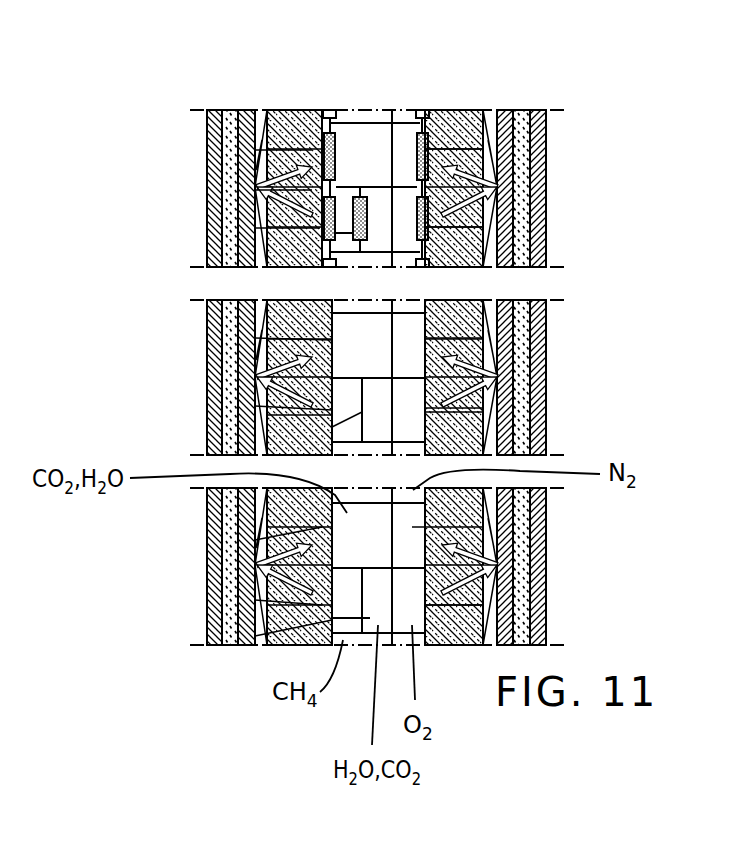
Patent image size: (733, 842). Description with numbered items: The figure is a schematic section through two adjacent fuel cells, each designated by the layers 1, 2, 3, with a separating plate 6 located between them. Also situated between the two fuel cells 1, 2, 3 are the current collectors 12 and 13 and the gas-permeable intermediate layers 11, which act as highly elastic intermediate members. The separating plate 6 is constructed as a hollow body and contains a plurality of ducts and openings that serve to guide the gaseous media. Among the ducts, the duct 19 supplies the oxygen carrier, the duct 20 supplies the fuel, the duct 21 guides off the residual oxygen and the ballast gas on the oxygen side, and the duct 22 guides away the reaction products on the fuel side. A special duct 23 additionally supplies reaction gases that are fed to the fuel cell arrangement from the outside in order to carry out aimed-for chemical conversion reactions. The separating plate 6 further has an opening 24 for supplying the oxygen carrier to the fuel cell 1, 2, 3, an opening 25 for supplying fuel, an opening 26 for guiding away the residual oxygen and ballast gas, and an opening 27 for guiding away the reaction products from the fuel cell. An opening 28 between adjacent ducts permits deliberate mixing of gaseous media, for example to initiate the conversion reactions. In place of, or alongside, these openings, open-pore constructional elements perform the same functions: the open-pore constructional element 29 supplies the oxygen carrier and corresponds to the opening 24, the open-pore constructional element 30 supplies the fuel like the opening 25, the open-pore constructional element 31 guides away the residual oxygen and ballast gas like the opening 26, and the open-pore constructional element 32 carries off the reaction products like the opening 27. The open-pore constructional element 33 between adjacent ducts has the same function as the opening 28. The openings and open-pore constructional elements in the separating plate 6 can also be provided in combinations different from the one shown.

The fuel cell 1 is at (230, 110).
The fuel cell 2 is at (215, 110).
The fuel cell 3 is at (246, 110).
The separating plate 6 is at (379, 118).
The gas-permeable intermediate layer 11 is at (312, 110).
The current collector 12 is at (490, 110).
The current collector 13 is at (258, 128).
The duct for supplying the oxygen carrier 19 is at (483, 605).
The duct for supplying the fuel 20 is at (255, 600).
The duct for guiding off residual oxygen and ballast gas 21 is at (412, 527).
The duct for guiding away reaction products 22 is at (255, 540).
The special duct for supplying reaction gases 23 is at (255, 636).
The opening for supply of the oxygen carrier 24 is at (483, 408).
The opening for supplying fuel 25 is at (255, 406).
The opening for guiding away residual oxygen and ballast gas 26 is at (483, 338).
The opening for guiding away reaction products 27 is at (255, 338).
The opening between adjacent ducts 28 is at (332, 437).
The open-pore constructional element for supplying the oxygen carrier 29 is at (483, 228).
The open-pore constructional element for supplying fuel 30 is at (312, 190).
The open-pore constructional element for guiding away residual oxygen and ballast ga 31 is at (483, 150).
The open-pore constructional element for carrying off reaction products 32 is at (312, 150).
The open-pore constructional element between adjacent ducts 33 is at (320, 228).